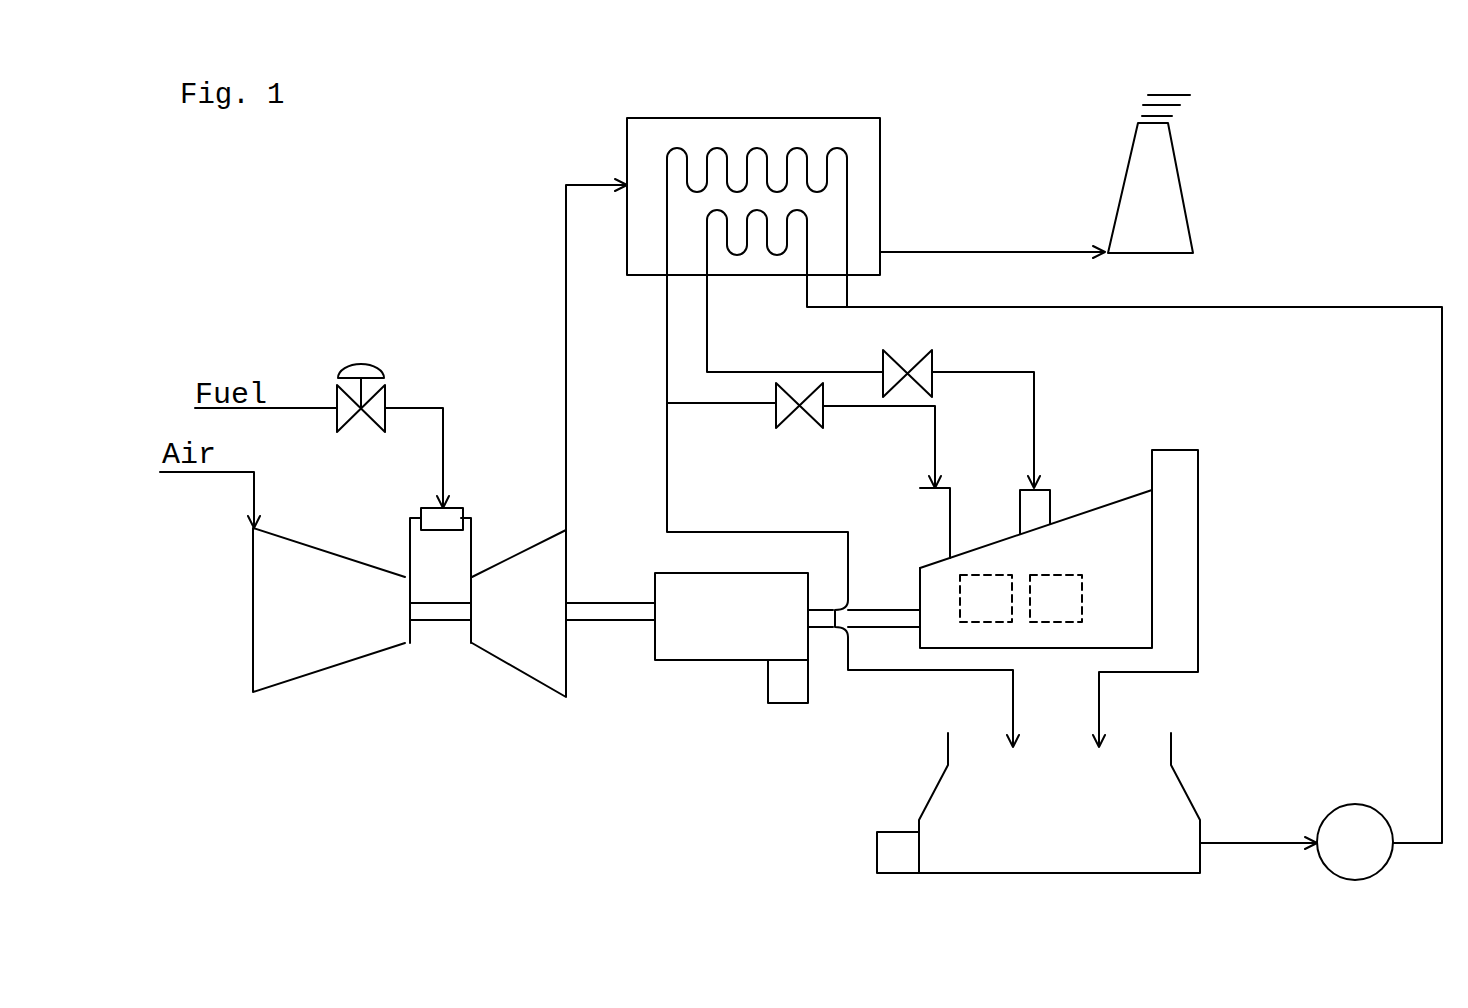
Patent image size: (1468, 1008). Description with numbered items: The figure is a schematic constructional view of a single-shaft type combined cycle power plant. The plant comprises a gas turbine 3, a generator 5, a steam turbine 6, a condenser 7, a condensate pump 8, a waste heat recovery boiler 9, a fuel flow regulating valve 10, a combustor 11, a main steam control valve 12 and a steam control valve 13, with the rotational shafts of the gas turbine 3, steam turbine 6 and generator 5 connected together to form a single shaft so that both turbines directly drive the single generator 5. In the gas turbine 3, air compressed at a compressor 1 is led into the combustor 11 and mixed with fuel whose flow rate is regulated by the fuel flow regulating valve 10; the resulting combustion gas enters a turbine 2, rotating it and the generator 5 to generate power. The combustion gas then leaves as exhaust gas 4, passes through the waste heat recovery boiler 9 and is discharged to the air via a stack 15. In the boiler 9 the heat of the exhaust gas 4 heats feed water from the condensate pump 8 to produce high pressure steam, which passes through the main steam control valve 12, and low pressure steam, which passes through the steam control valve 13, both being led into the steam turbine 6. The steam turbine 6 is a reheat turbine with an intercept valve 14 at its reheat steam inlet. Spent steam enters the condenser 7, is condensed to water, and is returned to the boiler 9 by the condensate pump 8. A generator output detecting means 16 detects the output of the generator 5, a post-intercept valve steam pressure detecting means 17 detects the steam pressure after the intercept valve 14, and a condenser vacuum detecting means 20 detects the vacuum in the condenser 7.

The compressor 1 is at (304, 630).
The turbine 2 is at (502, 630).
The gas turbine 3 is at (446, 664).
The exhaust gas 4 is at (563, 245).
The generator 5 is at (712, 629).
The steam turbine 6 is at (1100, 615).
The condenser 7 is at (1042, 839).
The condensate pump 8 is at (1338, 859).
The waste heat recovery boiler 9 is at (880, 165).
The fuel flow regulating valve 10 is at (409, 352).
The combustor 11 is at (462, 505).
The main steam control valve 12 is at (823, 430).
The steam control valve 13 is at (932, 365).
The intercept valve 14 is at (968, 615).
The stack 15 is at (1182, 182).
The generator output detecting means 16 is at (771, 699).
The post-intercept valve steam pressure detecting means 17 is at (1038, 615).
The condenser vacuum detecting means 20 is at (882, 868).